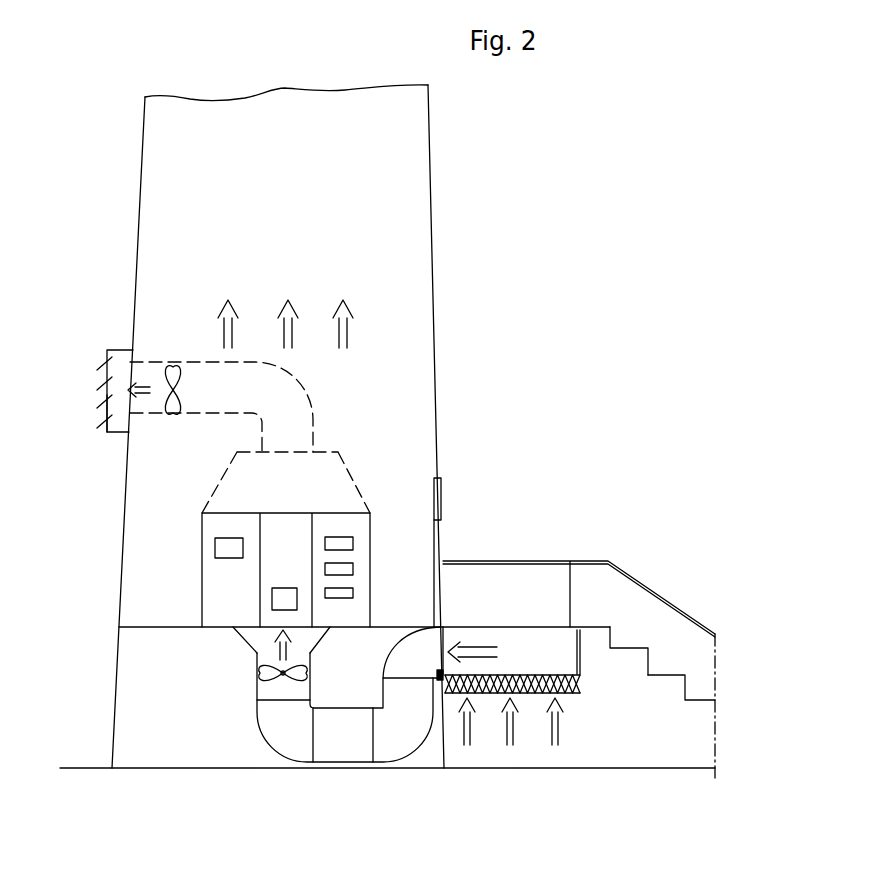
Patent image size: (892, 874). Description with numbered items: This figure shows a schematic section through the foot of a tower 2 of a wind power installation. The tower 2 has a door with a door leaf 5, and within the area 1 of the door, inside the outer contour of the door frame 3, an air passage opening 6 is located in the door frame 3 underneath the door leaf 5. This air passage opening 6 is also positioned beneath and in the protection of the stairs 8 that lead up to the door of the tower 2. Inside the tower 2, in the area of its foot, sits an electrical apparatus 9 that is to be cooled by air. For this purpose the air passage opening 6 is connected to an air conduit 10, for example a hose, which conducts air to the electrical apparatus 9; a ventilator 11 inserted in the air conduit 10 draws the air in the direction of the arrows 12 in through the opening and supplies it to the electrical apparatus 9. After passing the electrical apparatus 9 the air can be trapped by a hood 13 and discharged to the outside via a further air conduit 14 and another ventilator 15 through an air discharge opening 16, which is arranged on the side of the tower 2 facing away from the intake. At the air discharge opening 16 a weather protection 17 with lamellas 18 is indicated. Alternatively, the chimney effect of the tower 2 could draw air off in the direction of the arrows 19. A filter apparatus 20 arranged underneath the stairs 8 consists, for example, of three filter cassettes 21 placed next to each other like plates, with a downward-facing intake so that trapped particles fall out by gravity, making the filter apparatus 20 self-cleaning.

The area of a door 1 is at (440, 680).
The tower 2 is at (413, 212).
The door frame 3 is at (445, 645).
The door leaf 5 is at (443, 537).
The air passage opening 6 is at (477, 650).
The stairs 8 is at (648, 673).
The electrical apparatus 9 is at (358, 527).
The air conduit 10 is at (342, 733).
The ventilator 11 is at (273, 673).
The arrows 12 is at (282, 657).
The hood 13 is at (335, 467).
The further air conduit 14 is at (307, 403).
The ventilator 15 is at (168, 402).
The air discharge opening 16 is at (130, 370).
The weather protection 17 is at (107, 428).
The lamellas 18 is at (102, 402).
The arrows 19 is at (343, 333).
The filter apparatus 20 is at (630, 652).
The filter cassettes 21 is at (585, 500).